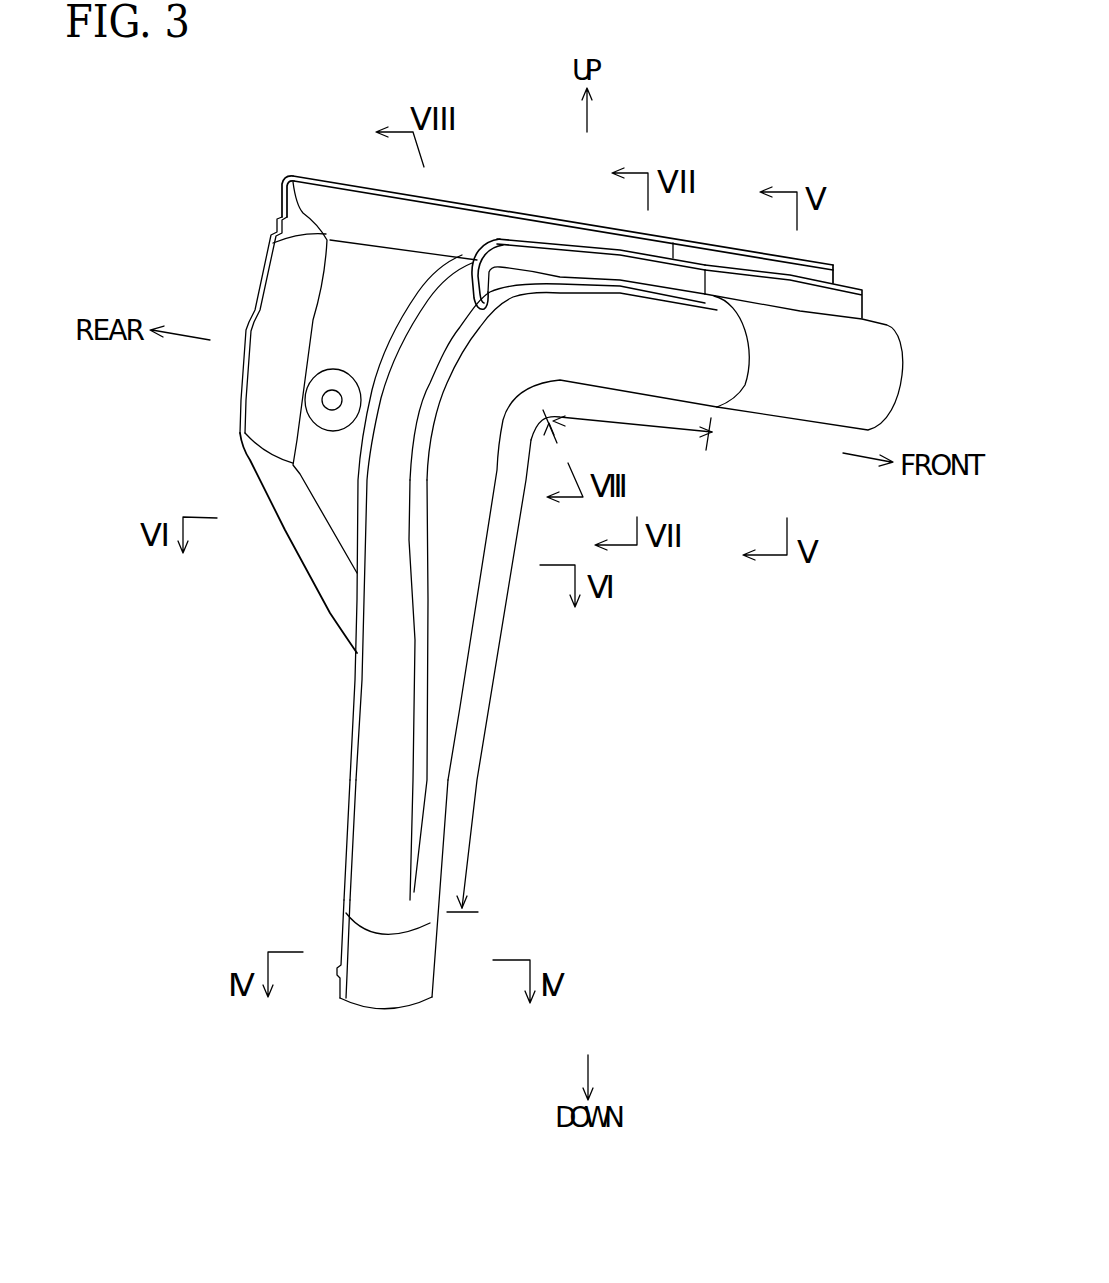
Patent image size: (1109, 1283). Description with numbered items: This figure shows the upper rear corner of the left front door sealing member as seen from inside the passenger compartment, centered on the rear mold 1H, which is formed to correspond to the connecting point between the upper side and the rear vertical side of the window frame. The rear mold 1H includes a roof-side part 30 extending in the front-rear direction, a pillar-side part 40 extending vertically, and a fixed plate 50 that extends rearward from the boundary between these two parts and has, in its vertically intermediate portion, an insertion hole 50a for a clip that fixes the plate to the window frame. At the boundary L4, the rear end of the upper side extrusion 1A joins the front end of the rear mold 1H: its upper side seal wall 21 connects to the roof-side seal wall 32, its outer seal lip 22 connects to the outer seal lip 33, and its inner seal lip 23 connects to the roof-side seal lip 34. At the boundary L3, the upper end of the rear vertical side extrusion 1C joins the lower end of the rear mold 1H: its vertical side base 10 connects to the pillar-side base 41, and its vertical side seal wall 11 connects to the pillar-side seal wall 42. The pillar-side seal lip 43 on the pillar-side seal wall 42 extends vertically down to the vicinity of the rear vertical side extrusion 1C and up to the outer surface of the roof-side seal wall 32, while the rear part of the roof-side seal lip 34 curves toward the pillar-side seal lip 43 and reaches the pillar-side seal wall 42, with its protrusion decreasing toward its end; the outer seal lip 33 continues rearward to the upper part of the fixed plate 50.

The rear mold 1H is at (224, 168).
The upper side extrusion 1A is at (820, 393).
The rear vertical side extrusion 1C is at (422, 998).
The vertical side base 10 is at (337, 968).
The vertical side seal wall 11 is at (383, 1000).
The upper side seal wall 21 is at (877, 390).
The outer seal lip 22 is at (812, 260).
The inner seal lip 23 is at (852, 288).
The roof-side part 30 is at (657, 430).
The roof-side seal wall 32 is at (709, 360).
The outer seal lip 33 is at (553, 217).
The roof-side seal lip 34 is at (520, 233).
The pillar-side part 40 is at (497, 667).
The pillar-side base 41 is at (347, 813).
The pillar-side seal wall 42 is at (375, 728).
The pillar-side seal lip 43 is at (537, 297).
The fixed plate 50 is at (255, 258).
The insertion hole 50a is at (322, 400).
The boundary between the rear vertical side extrusion and the rear mold L3 is at (370, 937).
The boundary between the upper side extrusion and the rear mold L4 is at (747, 357).